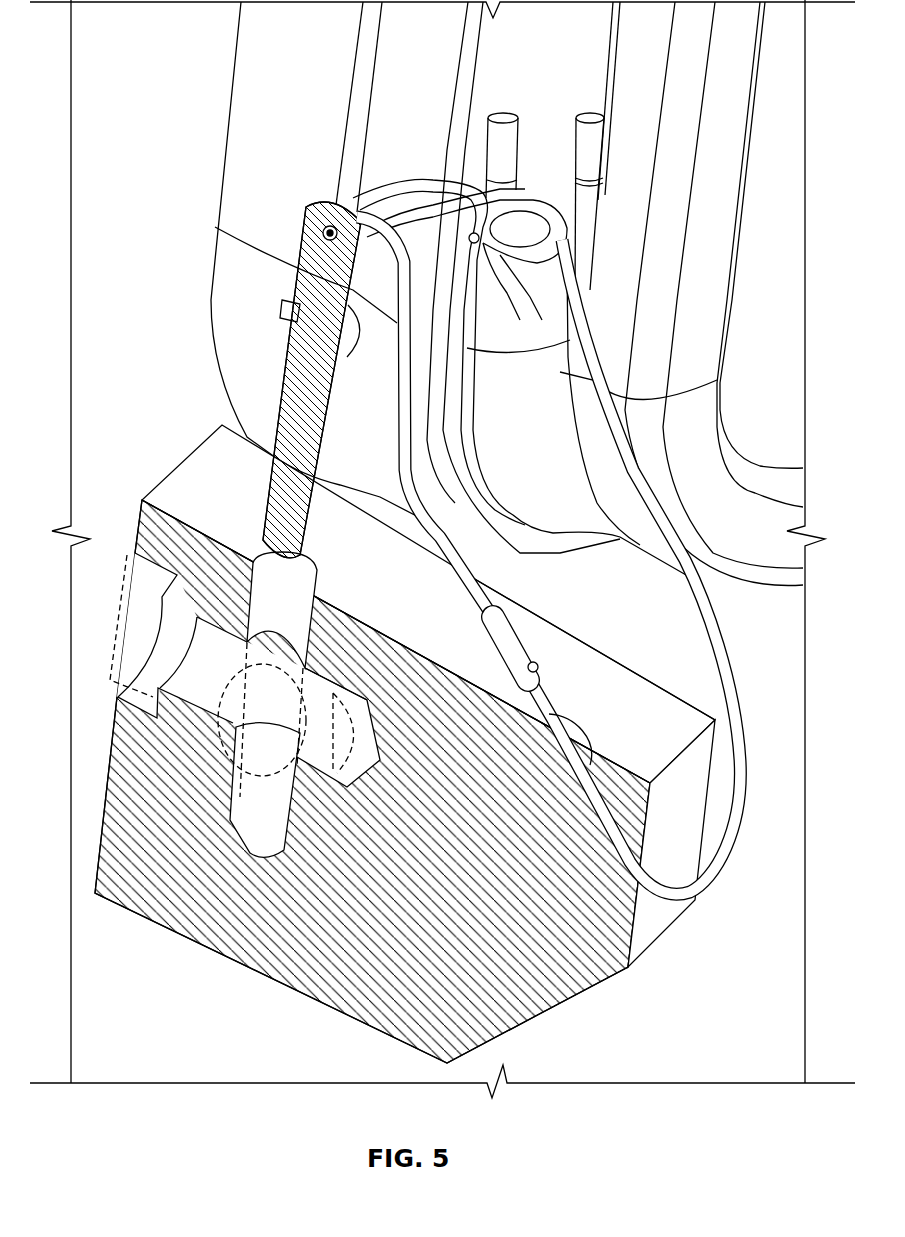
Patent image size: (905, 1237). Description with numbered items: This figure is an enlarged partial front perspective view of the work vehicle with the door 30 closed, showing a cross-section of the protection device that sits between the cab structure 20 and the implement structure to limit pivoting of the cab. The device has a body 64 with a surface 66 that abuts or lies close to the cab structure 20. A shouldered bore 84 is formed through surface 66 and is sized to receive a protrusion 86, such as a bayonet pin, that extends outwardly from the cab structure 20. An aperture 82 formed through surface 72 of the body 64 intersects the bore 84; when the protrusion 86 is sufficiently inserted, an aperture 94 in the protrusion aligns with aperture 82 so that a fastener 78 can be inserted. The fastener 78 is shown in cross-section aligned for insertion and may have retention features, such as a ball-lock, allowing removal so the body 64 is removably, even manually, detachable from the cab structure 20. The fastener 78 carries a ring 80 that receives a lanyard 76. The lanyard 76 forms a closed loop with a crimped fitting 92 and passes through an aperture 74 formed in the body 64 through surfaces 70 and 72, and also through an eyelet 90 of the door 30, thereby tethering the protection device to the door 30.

The cab structure 20 is at (142, 309).
The door 30 is at (778, 318).
The body 64 is at (226, 499).
The surface 66 is at (137, 530).
The surface 70 is at (692, 826).
The surface 72 is at (668, 749).
The aperture 74 is at (575, 725).
The lanyard 76 is at (700, 610).
The fastener 78 is at (305, 237).
The ring 80 is at (397, 187).
The aperture 82 is at (311, 565).
The shouldered bore 84 is at (217, 633).
The protrusion 86 is at (372, 667).
The eyelet 90 is at (523, 287).
The crimped fitting 92 is at (497, 648).
The aperture 94 is at (213, 735).